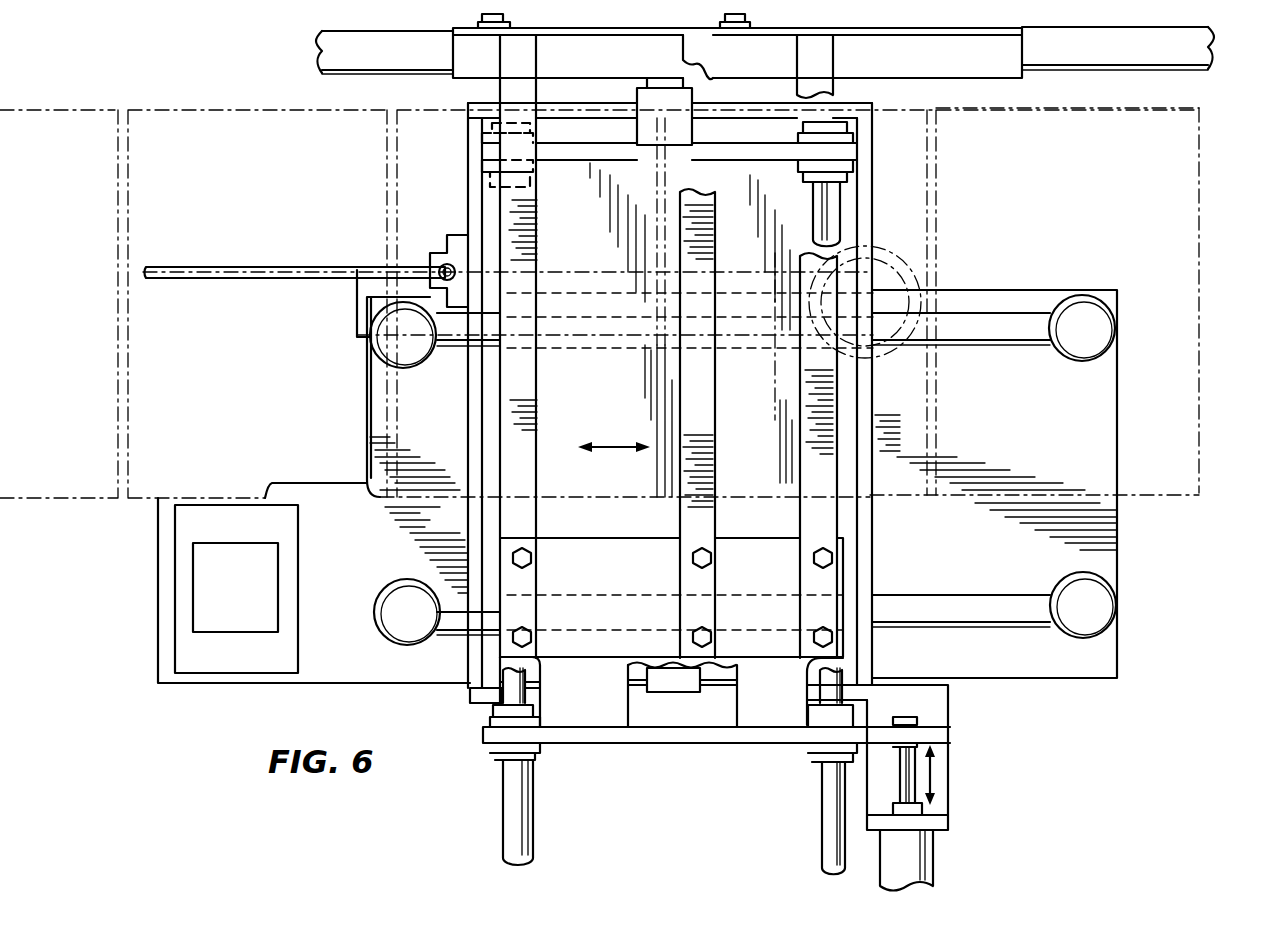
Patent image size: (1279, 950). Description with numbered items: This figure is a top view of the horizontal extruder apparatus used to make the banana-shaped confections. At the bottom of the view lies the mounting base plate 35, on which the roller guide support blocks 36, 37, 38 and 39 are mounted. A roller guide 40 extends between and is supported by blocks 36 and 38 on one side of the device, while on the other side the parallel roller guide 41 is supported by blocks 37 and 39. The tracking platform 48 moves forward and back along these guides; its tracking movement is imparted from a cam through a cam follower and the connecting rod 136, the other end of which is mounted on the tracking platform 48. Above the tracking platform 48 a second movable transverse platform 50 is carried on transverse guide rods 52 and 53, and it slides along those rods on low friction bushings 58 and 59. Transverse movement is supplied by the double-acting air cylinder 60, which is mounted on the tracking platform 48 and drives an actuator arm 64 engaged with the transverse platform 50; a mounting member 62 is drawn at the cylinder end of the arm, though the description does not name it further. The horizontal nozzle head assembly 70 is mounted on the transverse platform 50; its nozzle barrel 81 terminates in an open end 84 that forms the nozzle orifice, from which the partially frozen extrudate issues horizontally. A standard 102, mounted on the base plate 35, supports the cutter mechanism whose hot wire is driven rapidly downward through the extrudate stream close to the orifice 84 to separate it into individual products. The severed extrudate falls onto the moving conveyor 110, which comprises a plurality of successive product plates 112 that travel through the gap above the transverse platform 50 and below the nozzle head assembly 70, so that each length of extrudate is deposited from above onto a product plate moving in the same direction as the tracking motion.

The product plates 112 is at (187, 118).
The moving conveyor 110 is at (1198, 226).
The connecting rod 136 is at (220, 270).
The open end of barrel 84 is at (357, 290).
The roller guide support block 39 is at (387, 345).
The nozzle barrel 81 is at (598, 272).
The horizontal nozzle head assembly 70 is at (913, 264).
The roller guide 41 is at (1003, 318).
The roller guide support block 37 is at (1090, 325).
The mounting base plate 35 is at (1100, 412).
The standard 102 is at (250, 595).
The roller guide support block 38 is at (400, 592).
The transverse platform 50 is at (507, 514).
The tracking platform 48 is at (873, 564).
The roller guide 40 is at (975, 595).
The roller guide support block 36 is at (1100, 605).
The low friction bushing 58 is at (540, 748).
The low friction bushing 59 is at (805, 748).
The actuator arm 64 is at (905, 775).
The cylinder mounting block 62 is at (945, 820).
The transverse guide rod 52 is at (520, 812).
The transverse guide rod 53 is at (830, 800).
The double-acting air cylinder 60 is at (925, 858).